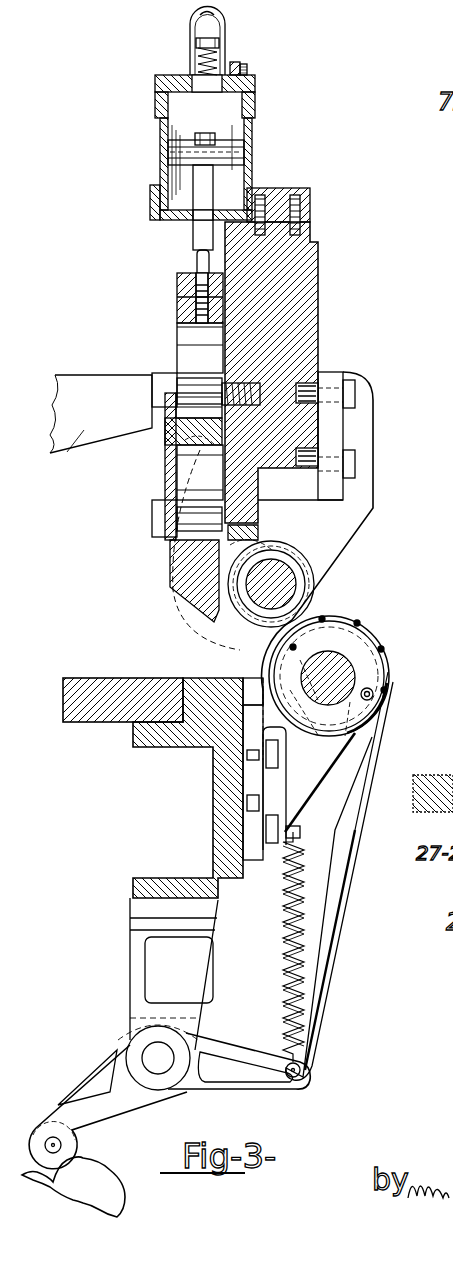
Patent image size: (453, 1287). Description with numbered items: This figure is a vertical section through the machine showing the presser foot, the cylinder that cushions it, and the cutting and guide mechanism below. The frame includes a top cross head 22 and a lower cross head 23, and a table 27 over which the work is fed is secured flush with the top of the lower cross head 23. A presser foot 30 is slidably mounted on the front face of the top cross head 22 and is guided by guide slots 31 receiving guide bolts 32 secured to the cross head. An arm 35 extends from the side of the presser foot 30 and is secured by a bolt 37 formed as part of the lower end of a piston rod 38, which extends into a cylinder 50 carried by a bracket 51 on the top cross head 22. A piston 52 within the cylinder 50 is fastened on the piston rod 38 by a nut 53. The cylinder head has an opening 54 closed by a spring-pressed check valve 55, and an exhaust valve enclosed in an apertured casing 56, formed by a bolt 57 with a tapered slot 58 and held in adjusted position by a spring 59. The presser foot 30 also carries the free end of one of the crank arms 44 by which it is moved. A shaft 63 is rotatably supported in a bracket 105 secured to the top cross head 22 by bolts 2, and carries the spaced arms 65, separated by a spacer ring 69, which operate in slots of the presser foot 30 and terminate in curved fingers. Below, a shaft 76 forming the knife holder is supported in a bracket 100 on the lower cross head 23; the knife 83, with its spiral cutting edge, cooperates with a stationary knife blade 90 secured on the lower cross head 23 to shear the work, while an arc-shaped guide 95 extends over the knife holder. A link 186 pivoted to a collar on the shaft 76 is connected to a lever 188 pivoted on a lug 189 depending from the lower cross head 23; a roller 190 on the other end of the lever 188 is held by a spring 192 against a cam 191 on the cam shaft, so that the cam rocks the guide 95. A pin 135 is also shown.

The bolts 2 is at (352, 460).
The top cross head 22 is at (293, 302).
The lower cross head 23 is at (170, 738).
The table 27 is at (120, 686).
The presser foot 30 is at (172, 563).
The guide slots 31 is at (195, 338).
The guide bolts 32 is at (160, 392).
The arm 35 is at (178, 284).
The bolt 37 is at (202, 262).
The piston rod 38 is at (205, 228).
The crank arms 44 is at (78, 446).
The cylinder 50 is at (165, 128).
The bracket 51 is at (312, 207).
The piston 52 is at (246, 164).
The nut 53 is at (207, 136).
The opening 54 is at (236, 64).
The check valve 55 is at (247, 75).
The apertured casing 56 is at (188, 18).
The bolt 57 is at (212, 38).
The tapered slot 58 is at (188, 72).
The spring 59 is at (196, 50).
The shaft 63 is at (302, 588).
The arms 65 is at (174, 574).
The spacer ring 69 is at (274, 530).
The shaft 76 is at (362, 670).
The knife 83 is at (286, 770).
The stationary knife blade 90 is at (245, 683).
The arc-shaped guide 95 is at (376, 646).
The brackets 100 is at (312, 788).
The brackets 105 is at (354, 530).
The rod 135 is at (377, 740).
The link 186 is at (342, 898).
The levers 188 is at (215, 1068).
The lugs 189 is at (160, 975).
The rollers 190 is at (78, 1146).
The cams 191 is at (118, 1202).
The springs 192 is at (282, 1000).